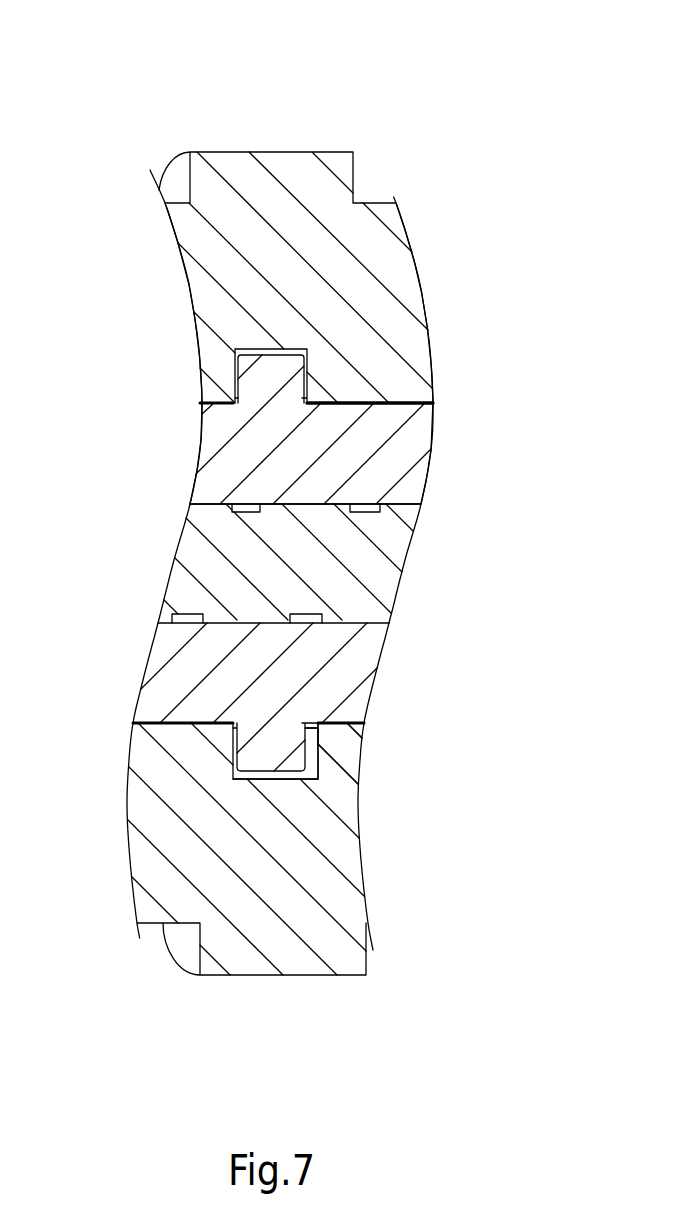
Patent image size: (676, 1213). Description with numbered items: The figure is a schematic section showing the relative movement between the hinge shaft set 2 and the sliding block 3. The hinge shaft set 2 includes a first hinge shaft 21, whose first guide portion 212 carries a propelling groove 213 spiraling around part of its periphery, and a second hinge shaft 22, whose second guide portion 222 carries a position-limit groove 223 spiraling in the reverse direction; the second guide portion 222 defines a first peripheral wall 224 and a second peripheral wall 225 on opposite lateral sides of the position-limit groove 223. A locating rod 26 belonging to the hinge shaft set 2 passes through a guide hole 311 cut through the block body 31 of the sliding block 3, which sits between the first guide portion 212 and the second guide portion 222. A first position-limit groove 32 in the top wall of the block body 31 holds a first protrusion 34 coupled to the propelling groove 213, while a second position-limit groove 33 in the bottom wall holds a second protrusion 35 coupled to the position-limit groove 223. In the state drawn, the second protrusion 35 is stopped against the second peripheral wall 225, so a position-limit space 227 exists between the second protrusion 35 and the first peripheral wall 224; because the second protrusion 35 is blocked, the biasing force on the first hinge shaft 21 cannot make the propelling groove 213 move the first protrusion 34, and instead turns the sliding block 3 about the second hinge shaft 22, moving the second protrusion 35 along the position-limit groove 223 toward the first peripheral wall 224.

The hinge shaft set 2 is at (255, 137).
The first hinge shaft 21 is at (404, 280).
The first guide portion 212 is at (413, 343).
The propelling groove 213 is at (232, 310).
The sliding block 3 is at (422, 430).
The block body 31 is at (222, 482).
The guide hole 311 is at (290, 497).
The first position-limit groove 32 is at (377, 397).
The first protrusion 34 is at (250, 387).
The locating rod 26 is at (386, 572).
The second position-limit groove 33 is at (163, 723).
The second protrusion 35 is at (255, 760).
The second hinge shaft 22 is at (343, 840).
The second guide portion 222 is at (345, 800).
The position-limit groove 223 is at (292, 790).
The first peripheral wall 224 is at (320, 767).
The second peripheral wall 225 is at (273, 779).
The position-limit space 227 is at (318, 736).